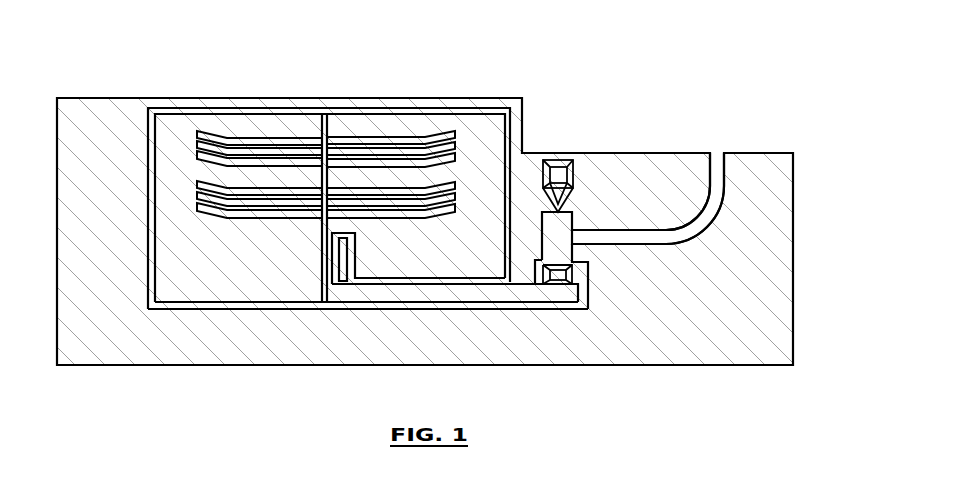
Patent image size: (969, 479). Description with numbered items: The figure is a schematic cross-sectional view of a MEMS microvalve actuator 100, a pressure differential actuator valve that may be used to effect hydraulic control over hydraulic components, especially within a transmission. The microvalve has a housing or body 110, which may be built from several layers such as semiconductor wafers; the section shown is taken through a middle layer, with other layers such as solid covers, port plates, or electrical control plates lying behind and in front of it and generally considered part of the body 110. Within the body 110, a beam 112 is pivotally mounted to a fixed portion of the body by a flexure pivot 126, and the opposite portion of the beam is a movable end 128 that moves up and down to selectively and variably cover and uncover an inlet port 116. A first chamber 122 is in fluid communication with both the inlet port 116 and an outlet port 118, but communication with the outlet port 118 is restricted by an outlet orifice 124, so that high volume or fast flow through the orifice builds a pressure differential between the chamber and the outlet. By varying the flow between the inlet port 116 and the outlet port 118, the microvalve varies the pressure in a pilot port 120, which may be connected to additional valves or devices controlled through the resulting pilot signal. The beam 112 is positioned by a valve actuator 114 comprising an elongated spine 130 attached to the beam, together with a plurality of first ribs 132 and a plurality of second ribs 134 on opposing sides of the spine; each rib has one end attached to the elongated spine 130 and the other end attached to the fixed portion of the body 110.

The MEMS microvalve actuator 100 is at (225, 74).
The body 110 is at (122, 339).
The beam 112 is at (478, 300).
The valve actuator 114 is at (273, 229).
The inlet port 116 is at (576, 274).
The outlet port 118 is at (562, 158).
The pilot port 120 is at (716, 162).
The first chamber 122 is at (540, 238).
The outlet orifice 124 is at (575, 228).
The flexure pivot 126 is at (360, 268).
The movable end 128 is at (558, 311).
The elongated spine 130 is at (337, 127).
The first ribs 132 is at (198, 190).
The second ribs 134 is at (478, 195).